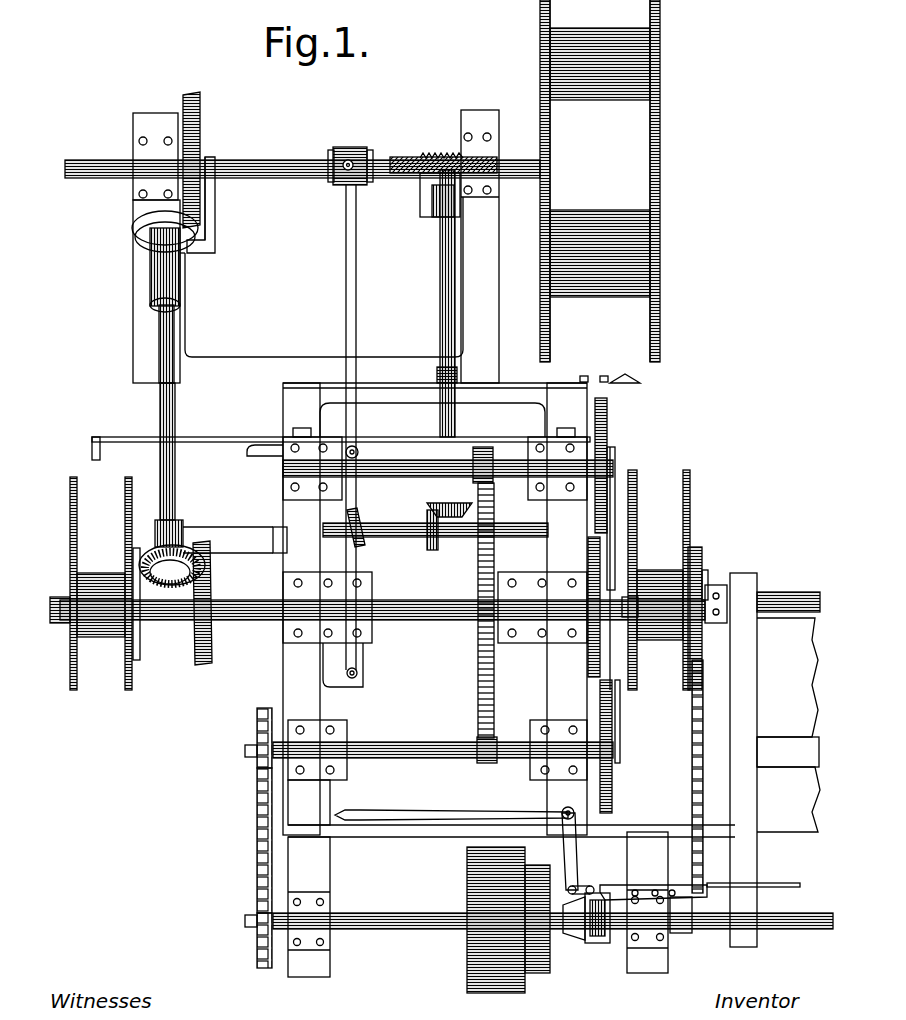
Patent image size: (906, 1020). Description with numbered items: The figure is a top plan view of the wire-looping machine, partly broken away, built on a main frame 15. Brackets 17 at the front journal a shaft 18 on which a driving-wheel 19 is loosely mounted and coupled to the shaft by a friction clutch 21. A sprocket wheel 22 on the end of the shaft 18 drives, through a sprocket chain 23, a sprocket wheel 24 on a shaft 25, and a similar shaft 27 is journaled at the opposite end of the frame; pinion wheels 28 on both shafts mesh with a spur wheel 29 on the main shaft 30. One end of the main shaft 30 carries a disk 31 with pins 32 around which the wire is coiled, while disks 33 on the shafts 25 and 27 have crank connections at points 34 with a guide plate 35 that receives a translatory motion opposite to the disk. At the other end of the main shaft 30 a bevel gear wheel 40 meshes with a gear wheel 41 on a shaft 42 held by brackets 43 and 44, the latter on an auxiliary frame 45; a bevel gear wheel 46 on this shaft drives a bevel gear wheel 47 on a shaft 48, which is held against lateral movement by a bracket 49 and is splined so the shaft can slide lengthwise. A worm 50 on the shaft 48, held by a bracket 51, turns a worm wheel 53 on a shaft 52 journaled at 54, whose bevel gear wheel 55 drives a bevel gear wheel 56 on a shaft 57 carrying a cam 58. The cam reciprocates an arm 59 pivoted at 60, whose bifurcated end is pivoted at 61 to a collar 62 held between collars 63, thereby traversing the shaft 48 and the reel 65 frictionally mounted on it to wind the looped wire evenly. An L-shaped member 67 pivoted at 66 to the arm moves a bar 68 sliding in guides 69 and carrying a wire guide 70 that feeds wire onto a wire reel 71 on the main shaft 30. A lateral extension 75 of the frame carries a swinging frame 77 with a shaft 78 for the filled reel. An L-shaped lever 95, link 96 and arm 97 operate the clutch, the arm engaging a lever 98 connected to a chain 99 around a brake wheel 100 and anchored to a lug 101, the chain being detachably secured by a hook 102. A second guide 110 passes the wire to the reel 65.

The main frame 15 is at (312, 795).
The brackets 17 is at (478, 904).
The shaft 18 is at (405, 930).
The driving-wheel 19 is at (470, 866).
The friction clutch 21 is at (540, 960).
The sprocket wheel 22 is at (258, 935).
The sprocket chain 23 is at (258, 870).
The sprocket wheel 24 is at (258, 740).
The shaft 25 is at (398, 745).
The shaft 27 is at (510, 478).
The pinion wheels 28 is at (483, 447).
The spur wheel 29 is at (488, 658).
The main shaft 30 is at (440, 600).
The disk 31 is at (590, 568).
The pins 32 is at (612, 565).
The disks 33 is at (605, 440).
The crank connection points 34 is at (612, 462).
The guide plate 35 is at (618, 667).
The bevel gear wheel 40 is at (205, 628).
The gear wheel 41 is at (185, 555).
The shaft 42 is at (172, 458).
The bracket 43 is at (235, 542).
The bracket 44 is at (157, 307).
The auxiliary frame 45 is at (298, 290).
The bevel gear wheel 46 is at (143, 227).
The bevel gear wheel 47 is at (200, 119).
The shaft 48 is at (283, 166).
The bracket 49 is at (215, 200).
The worm 50 is at (440, 153).
The bracket 51 is at (422, 205).
The shaft 52 is at (440, 260).
The worm wheel 53 is at (412, 163).
The journal 54 is at (457, 375).
The bevel gear wheel 55 is at (445, 506).
The bevel gear wheel 56 is at (440, 540).
The shaft 57 is at (405, 537).
The cam 58 is at (368, 505).
The arm 59 is at (356, 308).
The pivot 60 is at (358, 673).
The pivot 61 is at (350, 160).
The collar 62 is at (338, 152).
The collars 63 is at (333, 178).
The reel 65 is at (622, 118).
The pivot 66 is at (358, 452).
The L-shaped member 67 is at (268, 458).
The bar 68 is at (238, 437).
The guides 69 is at (303, 428).
The wire guide 70 is at (97, 435).
The wire reel 71 is at (125, 500).
The lateral extension 75 is at (774, 760).
The swinging frame 77 is at (788, 784).
The shaft 78 is at (792, 580).
The L-shaped lever 95 is at (478, 812).
The link 96 is at (588, 880).
The arm 97 is at (593, 930).
The lever 98 is at (645, 884).
The chain 99 is at (694, 795).
The brake wheel 100 is at (697, 577).
The lug 101 is at (683, 900).
The hook 102 is at (762, 889).
The second guide 110 is at (622, 360).